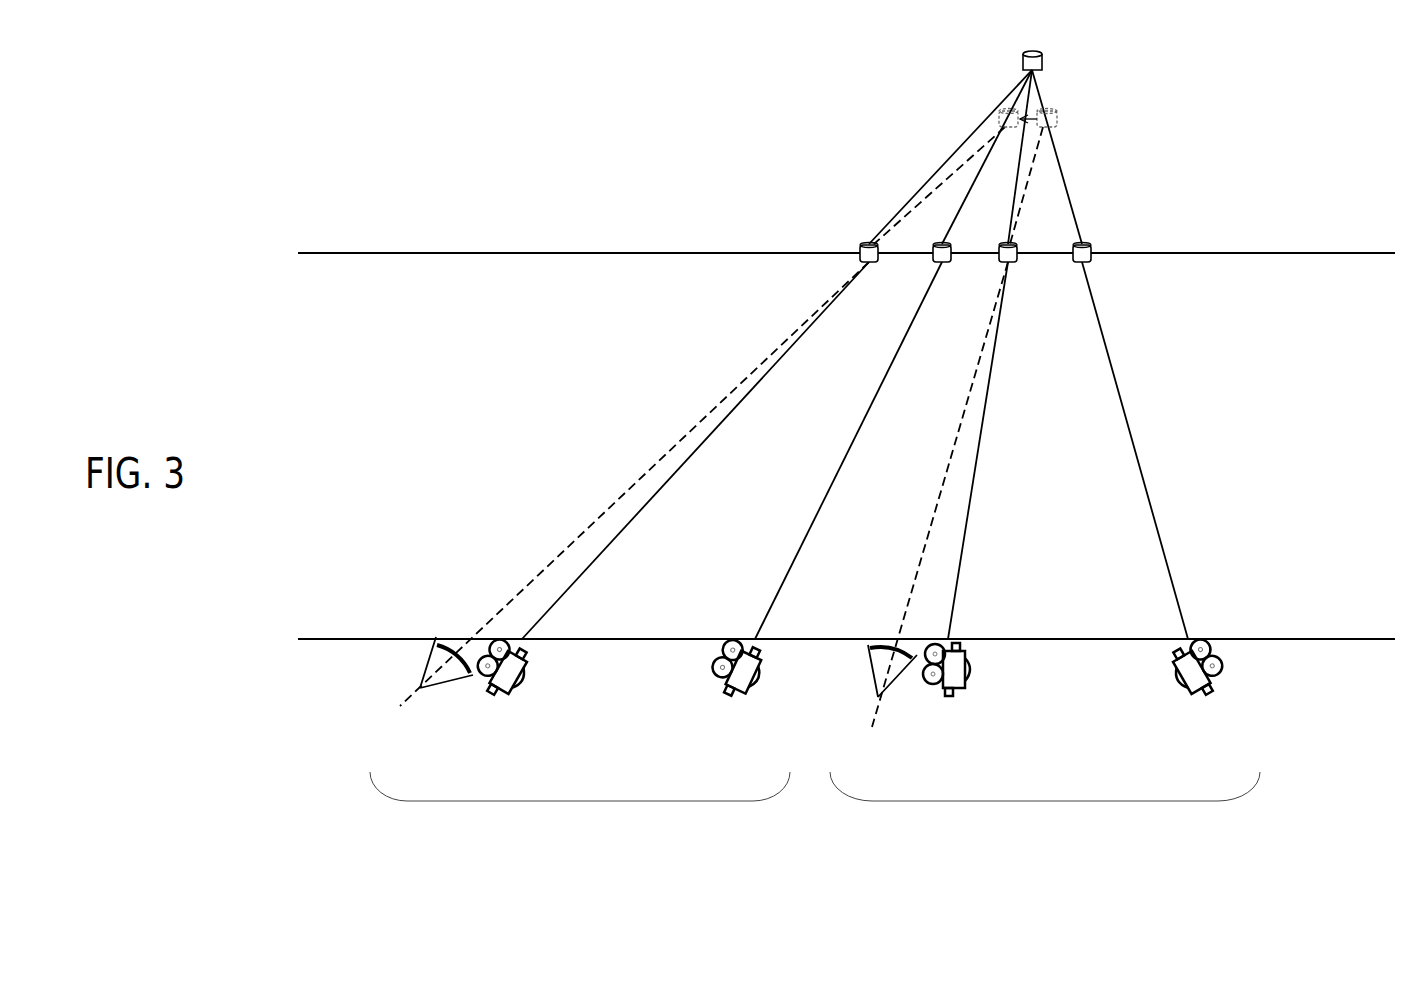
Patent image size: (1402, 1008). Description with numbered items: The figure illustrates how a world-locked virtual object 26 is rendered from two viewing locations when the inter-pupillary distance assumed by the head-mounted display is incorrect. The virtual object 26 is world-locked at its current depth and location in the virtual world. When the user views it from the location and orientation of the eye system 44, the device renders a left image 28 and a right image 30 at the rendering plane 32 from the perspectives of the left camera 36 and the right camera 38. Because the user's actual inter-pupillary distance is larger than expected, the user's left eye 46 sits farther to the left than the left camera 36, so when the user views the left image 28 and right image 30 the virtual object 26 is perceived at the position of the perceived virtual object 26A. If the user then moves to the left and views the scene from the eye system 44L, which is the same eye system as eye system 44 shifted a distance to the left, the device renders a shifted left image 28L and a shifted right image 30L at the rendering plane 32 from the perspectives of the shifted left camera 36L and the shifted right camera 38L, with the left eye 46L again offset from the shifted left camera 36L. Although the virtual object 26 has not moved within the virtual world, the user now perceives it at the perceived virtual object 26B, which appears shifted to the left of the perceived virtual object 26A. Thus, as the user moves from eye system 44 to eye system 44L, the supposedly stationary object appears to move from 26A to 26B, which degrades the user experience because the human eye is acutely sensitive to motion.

The virtual object 26 is at (1047, 60).
The perceived virtual object 26A is at (1062, 119).
The perceived virtual object 26B is at (984, 119).
The left image 28 is at (1019, 267).
The shifted left image 28L is at (869, 266).
The right image 30 is at (1100, 267).
The shifted right image 30L is at (945, 267).
The rendering plane 32 is at (436, 276).
The left camera 36 is at (953, 704).
The shifted left camera 36L is at (503, 704).
The right camera 38 is at (1192, 704).
The shifted right camera 38L is at (741, 702).
The eye system 44 is at (1045, 816).
The eye system 44L is at (580, 801).
The left eye 46 is at (895, 706).
The left eye 46L is at (435, 700).